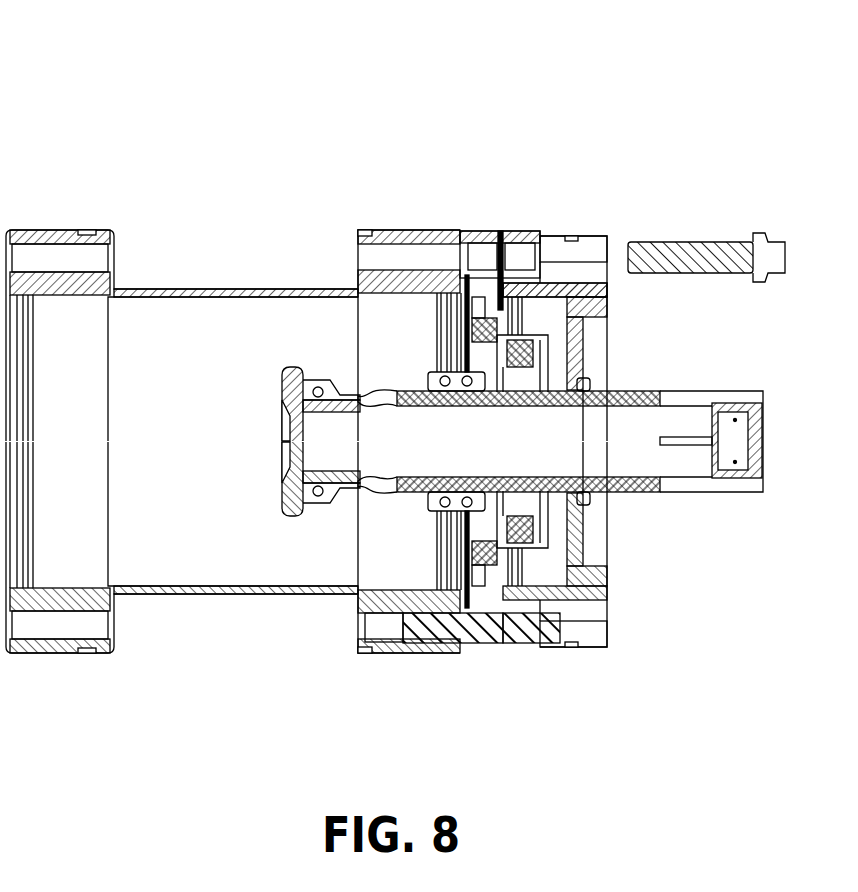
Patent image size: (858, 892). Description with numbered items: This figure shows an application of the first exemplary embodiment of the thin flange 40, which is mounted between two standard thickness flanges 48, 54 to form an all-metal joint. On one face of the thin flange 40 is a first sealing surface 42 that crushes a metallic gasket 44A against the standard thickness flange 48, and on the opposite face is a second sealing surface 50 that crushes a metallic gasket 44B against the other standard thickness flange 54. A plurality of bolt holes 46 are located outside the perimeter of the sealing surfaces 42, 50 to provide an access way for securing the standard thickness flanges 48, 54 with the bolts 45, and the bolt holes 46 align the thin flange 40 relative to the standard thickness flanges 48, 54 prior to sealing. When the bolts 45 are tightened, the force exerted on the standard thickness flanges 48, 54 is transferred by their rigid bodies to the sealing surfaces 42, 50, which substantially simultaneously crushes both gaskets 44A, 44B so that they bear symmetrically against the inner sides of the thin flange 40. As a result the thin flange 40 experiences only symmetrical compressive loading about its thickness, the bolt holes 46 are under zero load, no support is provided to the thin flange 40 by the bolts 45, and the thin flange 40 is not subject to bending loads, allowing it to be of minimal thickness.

The thin flange 40 is at (478, 232).
The first sealing surface 42 is at (603, 302).
The metallic gasket 44A is at (533, 645).
The metallic gasket 44B is at (430, 645).
The bolt 45 is at (685, 238).
The bolt holes 46 is at (505, 232).
The standard thickness flange 48 is at (608, 583).
The second sealing surface 50 is at (467, 273).
The standard thickness flange 54 is at (360, 602).